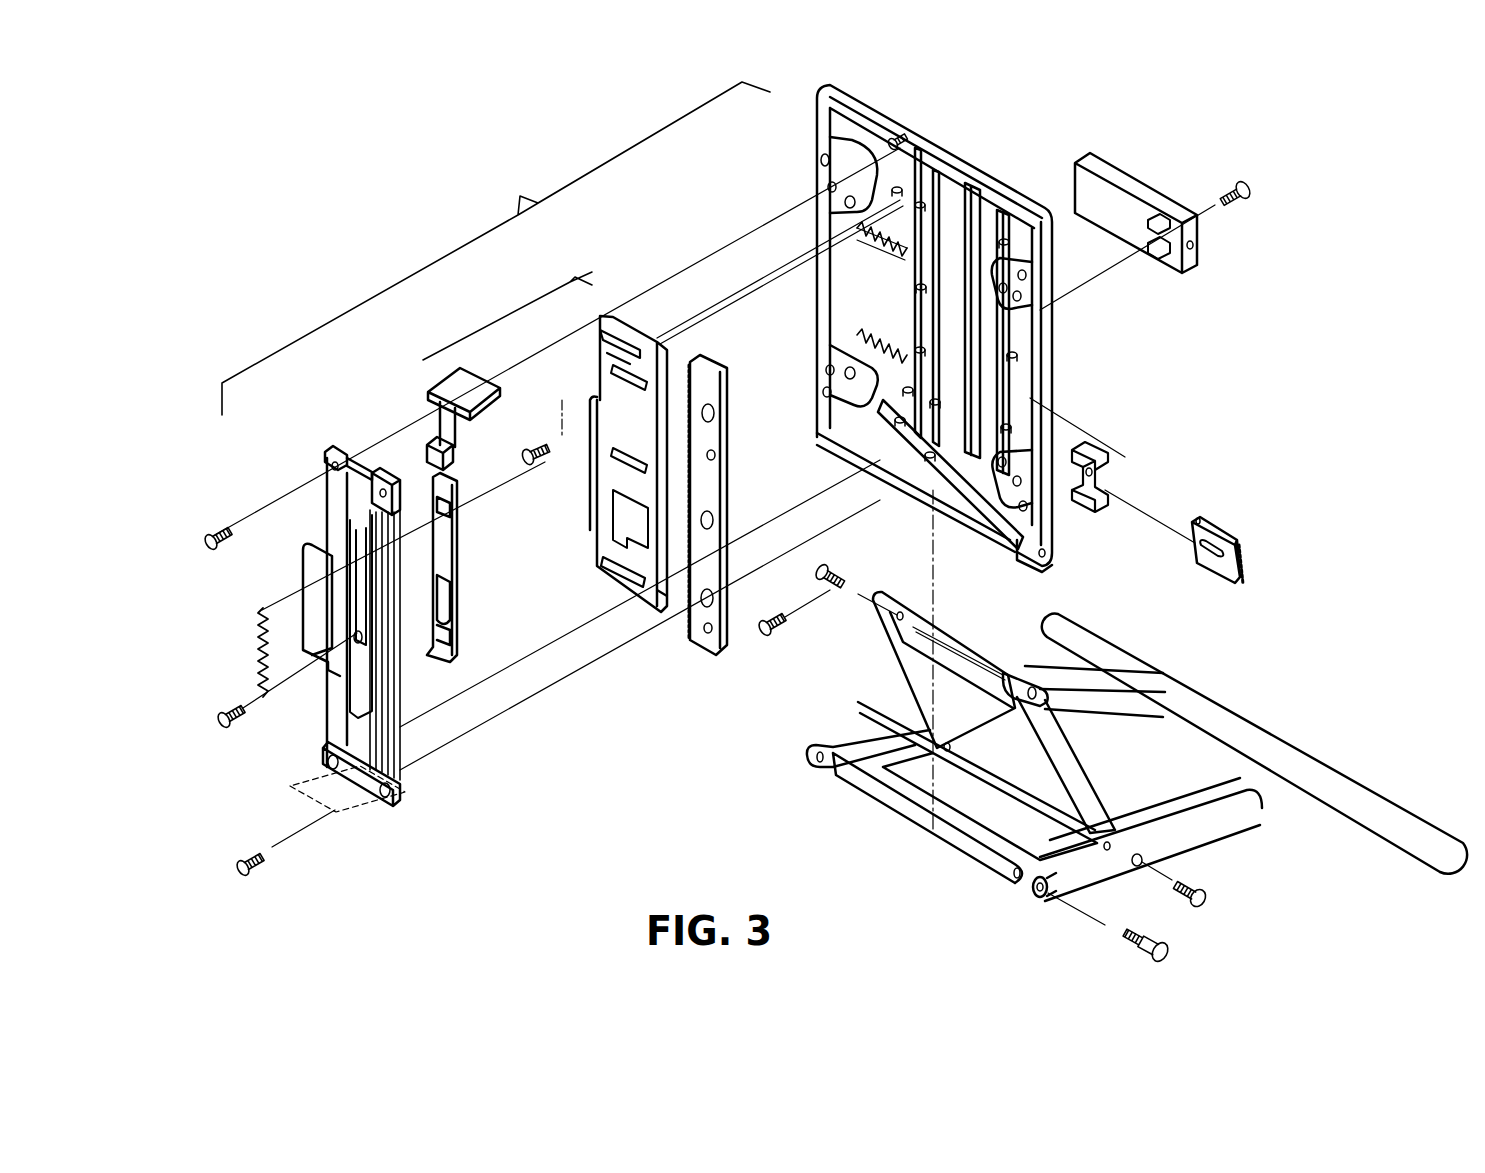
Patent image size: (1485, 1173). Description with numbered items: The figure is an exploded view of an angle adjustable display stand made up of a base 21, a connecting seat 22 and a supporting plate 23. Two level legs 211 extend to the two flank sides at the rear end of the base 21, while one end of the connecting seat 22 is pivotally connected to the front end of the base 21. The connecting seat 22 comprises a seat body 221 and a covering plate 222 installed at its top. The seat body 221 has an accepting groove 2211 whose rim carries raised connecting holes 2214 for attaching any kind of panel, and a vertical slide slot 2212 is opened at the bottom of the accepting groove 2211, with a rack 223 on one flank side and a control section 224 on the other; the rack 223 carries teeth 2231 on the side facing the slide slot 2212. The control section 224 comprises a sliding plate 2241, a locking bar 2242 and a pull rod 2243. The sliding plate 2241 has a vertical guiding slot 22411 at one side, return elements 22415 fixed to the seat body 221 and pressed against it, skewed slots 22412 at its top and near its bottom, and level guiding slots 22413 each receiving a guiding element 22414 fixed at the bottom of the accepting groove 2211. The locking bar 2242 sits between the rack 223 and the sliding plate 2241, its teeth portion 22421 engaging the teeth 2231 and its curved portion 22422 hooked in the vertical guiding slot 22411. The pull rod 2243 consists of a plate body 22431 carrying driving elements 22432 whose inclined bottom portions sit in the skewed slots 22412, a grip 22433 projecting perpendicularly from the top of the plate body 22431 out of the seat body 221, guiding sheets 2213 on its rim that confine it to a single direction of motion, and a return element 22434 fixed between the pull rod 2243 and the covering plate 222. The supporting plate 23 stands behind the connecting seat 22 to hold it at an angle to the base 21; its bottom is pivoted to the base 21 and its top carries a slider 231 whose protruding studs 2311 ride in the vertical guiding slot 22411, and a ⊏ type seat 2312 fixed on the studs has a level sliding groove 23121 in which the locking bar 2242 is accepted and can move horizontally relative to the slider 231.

The base 21 is at (1226, 710).
The level legs 211 is at (1393, 830).
The connecting seat 22 is at (496, 248).
The seat body 221 is at (812, 168).
The accepting groove 2211 is at (950, 318).
The vertical slide slot 2212 is at (975, 190).
The guiding sheets 2213 is at (900, 140).
The raised connecting holes 2214 is at (1047, 294).
The covering plate 222 is at (328, 448).
The rack 223 is at (727, 427).
The teeth 2231 is at (707, 360).
The control section 224 is at (507, 316).
The sliding plate 2241 is at (647, 593).
The vertical guiding slot 22411 is at (673, 603).
The skewed slots 22412 is at (615, 337).
The level guiding slots 22413 is at (603, 583).
The guiding element 22414 is at (545, 463).
The return elements 22415 is at (887, 243).
The locking bar 2242 is at (1213, 527).
The teeth portion 22421 is at (1242, 557).
The curved portion 22422 is at (1200, 517).
The pull rod 2243 is at (341, 597).
The plate body 22431 is at (457, 537).
The driving element 22432 is at (437, 448).
The grip 22433 is at (440, 386).
The return element 22434 is at (262, 628).
The supporting plate 23 is at (895, 660).
The slider 231 is at (1112, 175).
The protruding studs 2311 is at (1160, 262).
The ⊏ type seat 2312 is at (1093, 443).
The level sliding groove 23121 is at (1105, 465).